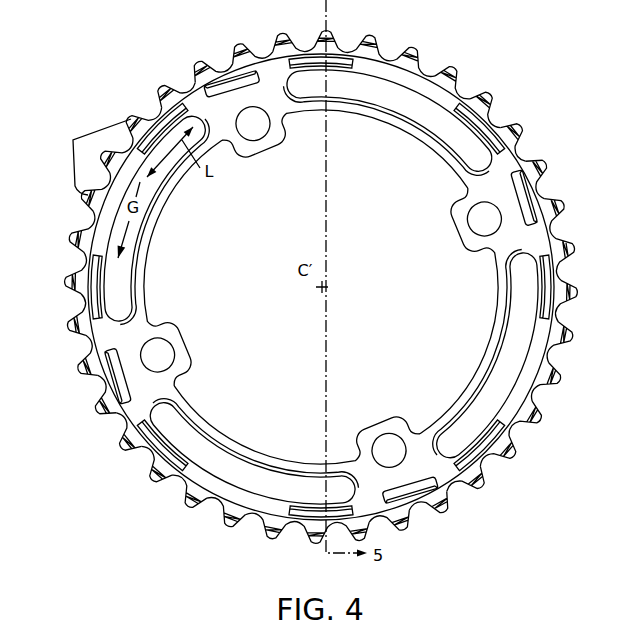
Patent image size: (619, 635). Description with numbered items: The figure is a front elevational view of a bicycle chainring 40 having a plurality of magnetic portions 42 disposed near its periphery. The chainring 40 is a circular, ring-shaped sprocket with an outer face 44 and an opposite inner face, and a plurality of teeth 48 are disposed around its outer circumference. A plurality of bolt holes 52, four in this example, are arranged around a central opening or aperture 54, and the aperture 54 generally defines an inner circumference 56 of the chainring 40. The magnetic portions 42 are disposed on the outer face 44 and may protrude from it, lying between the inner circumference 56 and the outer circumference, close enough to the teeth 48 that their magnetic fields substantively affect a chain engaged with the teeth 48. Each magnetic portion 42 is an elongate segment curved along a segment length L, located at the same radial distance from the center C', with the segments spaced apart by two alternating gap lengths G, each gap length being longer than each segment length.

The chainring 40 is at (522, 87).
The magnetic portions 42 is at (332, 58).
The outer face 44 is at (456, 442).
The teeth 48 is at (89, 157).
The bolt holes 52 is at (253, 133).
The central opening or aperture 54 is at (143, 283).
The inner circumference 56 is at (392, 146).